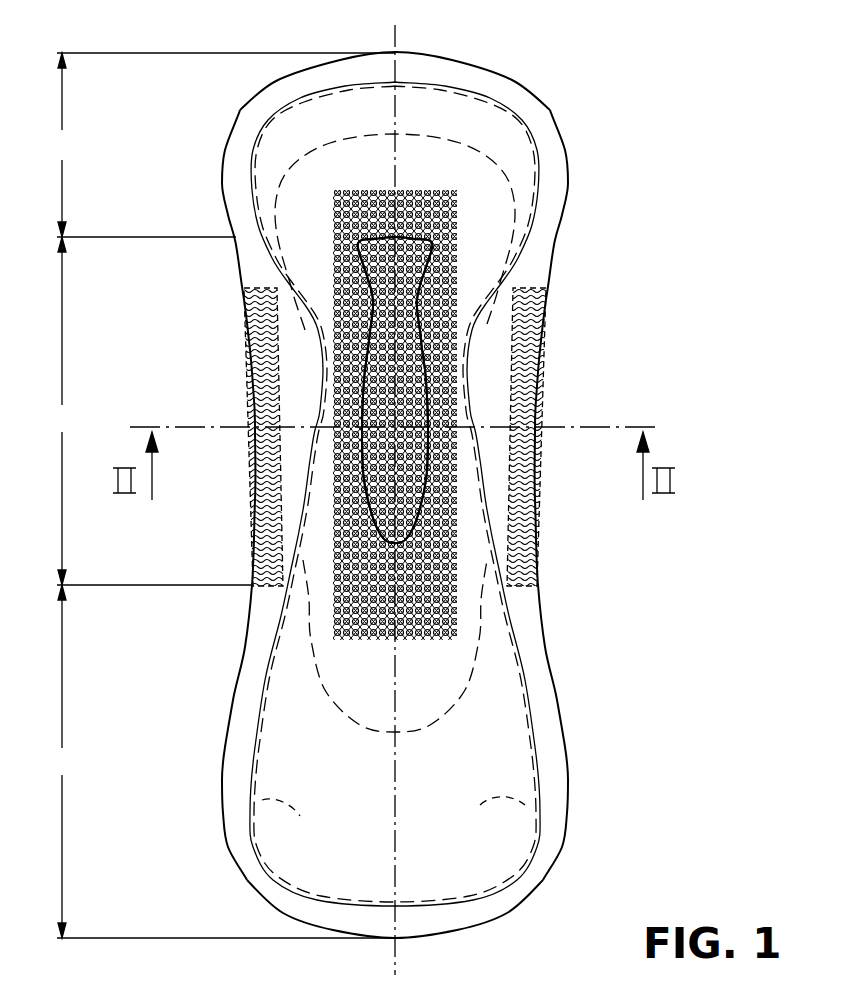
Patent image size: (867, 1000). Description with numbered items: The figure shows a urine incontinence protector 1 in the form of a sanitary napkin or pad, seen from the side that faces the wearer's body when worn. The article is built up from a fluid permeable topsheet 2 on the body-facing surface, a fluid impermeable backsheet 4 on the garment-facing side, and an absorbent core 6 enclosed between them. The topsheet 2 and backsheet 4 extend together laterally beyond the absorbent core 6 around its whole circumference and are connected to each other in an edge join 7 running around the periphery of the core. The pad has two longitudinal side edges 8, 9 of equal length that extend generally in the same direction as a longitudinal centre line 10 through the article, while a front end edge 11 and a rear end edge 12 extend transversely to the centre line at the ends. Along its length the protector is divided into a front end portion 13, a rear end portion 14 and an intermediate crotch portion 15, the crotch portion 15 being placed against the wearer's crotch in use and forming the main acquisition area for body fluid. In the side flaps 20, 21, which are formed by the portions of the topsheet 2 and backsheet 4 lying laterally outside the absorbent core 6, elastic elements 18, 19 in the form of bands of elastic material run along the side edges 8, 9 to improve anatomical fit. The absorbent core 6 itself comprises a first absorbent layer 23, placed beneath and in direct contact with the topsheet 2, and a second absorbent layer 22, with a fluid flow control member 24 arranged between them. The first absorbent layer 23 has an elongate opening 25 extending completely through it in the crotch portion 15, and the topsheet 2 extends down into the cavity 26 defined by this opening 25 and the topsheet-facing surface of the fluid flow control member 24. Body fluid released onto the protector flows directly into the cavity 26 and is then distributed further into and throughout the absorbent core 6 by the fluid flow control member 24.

The urine incontinence protector 1 is at (455, 499).
The fluid permeable topsheet 2 is at (428, 836).
The fluid impermeable backsheet 4 is at (525, 805).
The absorbent core 6 is at (500, 665).
The edge join 7 is at (538, 728).
The longitudinal side edge 8 is at (240, 262).
The longitudinal side edge 9 is at (549, 263).
The longitudinal centre line 10 is at (395, 36).
The front end edge 11 is at (507, 80).
The rear end edge 12 is at (467, 926).
The front end portion 13 is at (221, 145).
The rear end portion 14 is at (221, 761).
The crotch portion 15 is at (150, 411).
The elastic element 18 is at (258, 512).
The elastic element 19 is at (530, 512).
The side flap 20 is at (258, 466).
The side flap 21 is at (495, 452).
The second absorbent layer 22 is at (330, 658).
The first absorbent layer 23 is at (262, 800).
The fluid flow control member 24 is at (462, 578).
The opening 25 is at (380, 350).
The cavity 26 is at (380, 350).